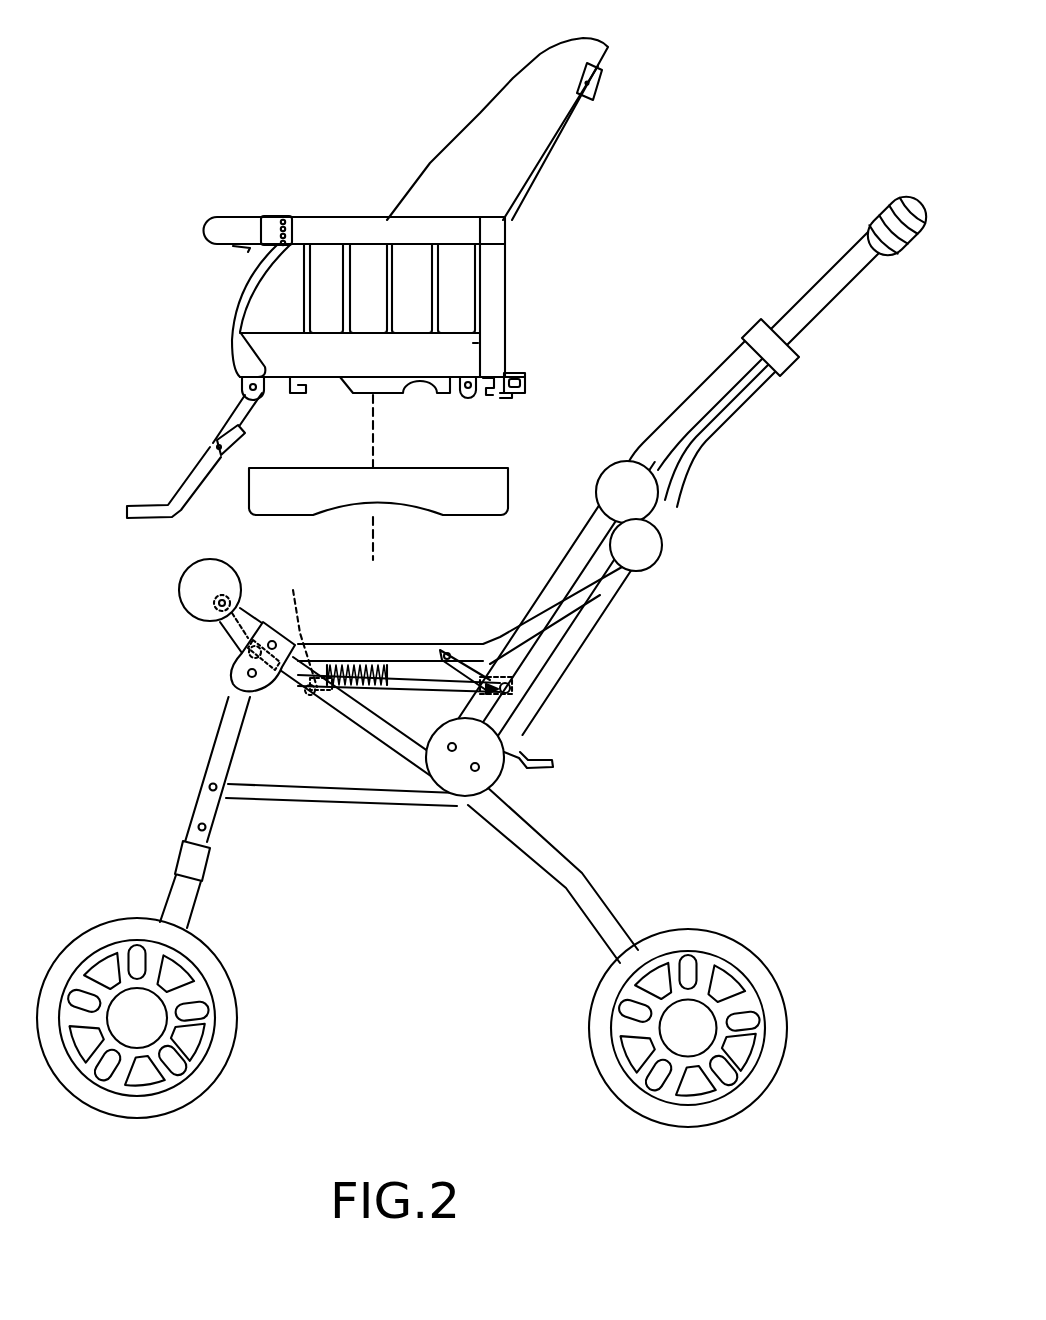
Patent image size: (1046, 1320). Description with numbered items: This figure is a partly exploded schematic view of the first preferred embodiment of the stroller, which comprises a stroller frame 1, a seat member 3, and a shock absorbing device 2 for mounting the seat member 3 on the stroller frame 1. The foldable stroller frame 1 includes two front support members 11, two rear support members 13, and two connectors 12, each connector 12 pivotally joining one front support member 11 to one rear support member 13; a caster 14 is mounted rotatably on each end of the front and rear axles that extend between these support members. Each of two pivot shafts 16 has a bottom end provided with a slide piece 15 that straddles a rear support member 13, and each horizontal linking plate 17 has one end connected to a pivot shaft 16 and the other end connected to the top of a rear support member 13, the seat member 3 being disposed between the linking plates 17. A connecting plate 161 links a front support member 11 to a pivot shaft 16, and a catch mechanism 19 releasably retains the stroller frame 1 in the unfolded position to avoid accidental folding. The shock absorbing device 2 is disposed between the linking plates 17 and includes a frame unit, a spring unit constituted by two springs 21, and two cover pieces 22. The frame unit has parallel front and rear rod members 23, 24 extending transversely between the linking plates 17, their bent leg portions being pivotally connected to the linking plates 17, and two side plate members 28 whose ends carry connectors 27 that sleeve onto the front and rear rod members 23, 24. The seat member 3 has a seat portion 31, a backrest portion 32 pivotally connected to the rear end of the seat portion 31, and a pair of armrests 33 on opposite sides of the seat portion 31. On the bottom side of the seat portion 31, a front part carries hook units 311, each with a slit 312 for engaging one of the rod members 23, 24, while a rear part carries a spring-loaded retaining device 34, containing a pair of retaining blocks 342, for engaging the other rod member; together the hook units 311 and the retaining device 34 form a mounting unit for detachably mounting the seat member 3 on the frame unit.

The stroller frame 1 is at (604, 824).
The shock absorbing device 2 is at (428, 705).
The seat member 3 is at (376, 204).
The front support member 11 is at (210, 815).
The connector 12 is at (240, 672).
The rear support member 13 is at (592, 890).
The caster 14 is at (220, 1038).
The slide piece 15 is at (485, 778).
The pivot shaft 16 is at (572, 641).
The horizontal linking plate 17 is at (387, 644).
The catch mechanism 19 is at (808, 316).
The spring 21 is at (352, 665).
The cover piece 22 is at (442, 495).
The front rod member 23 is at (386, 631).
The rear rod member 24 is at (512, 680).
The connector 27 is at (312, 688).
The side plate member 28 is at (415, 692).
The seat portion 31 is at (243, 340).
The backrest portion 32 is at (493, 97).
The armrest 33 is at (497, 294).
The spring-loaded retaining device 34 is at (523, 382).
The connecting plate 161 is at (303, 795).
The hook unit 311 is at (286, 389).
The slit 312 is at (301, 396).
The retaining block 342 is at (493, 398).